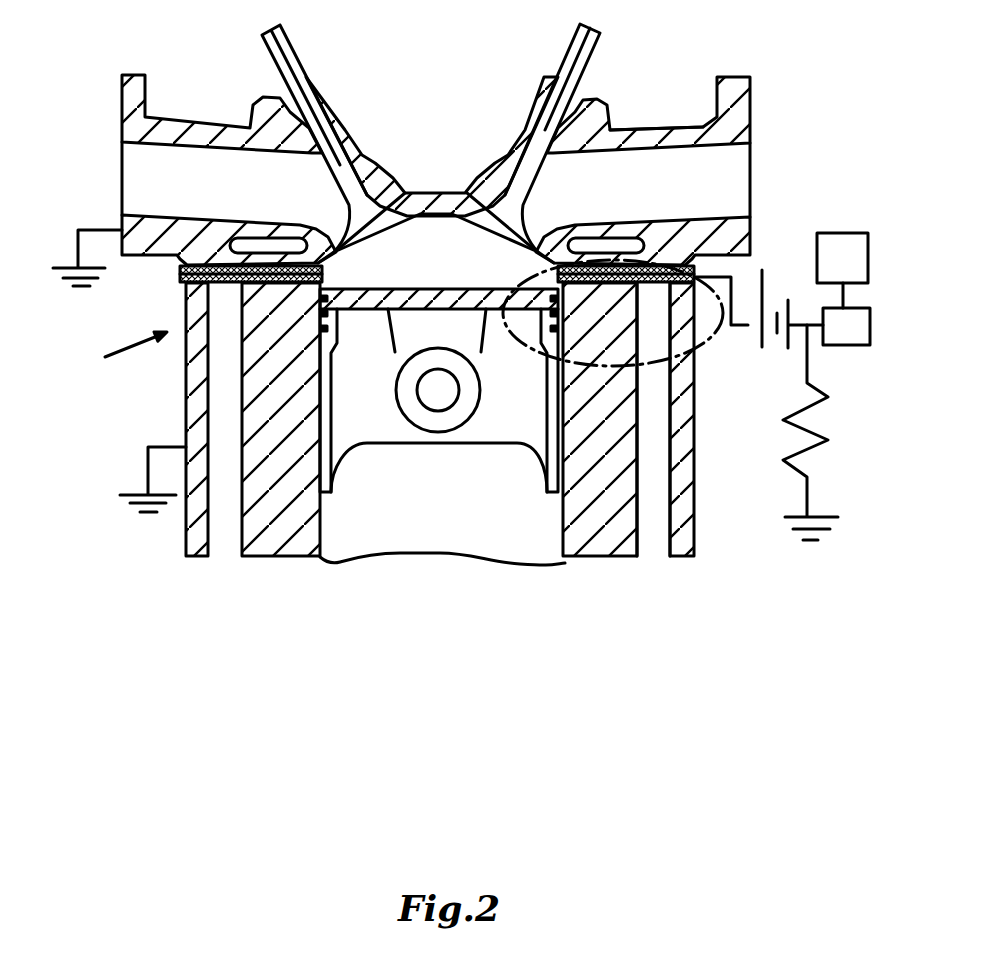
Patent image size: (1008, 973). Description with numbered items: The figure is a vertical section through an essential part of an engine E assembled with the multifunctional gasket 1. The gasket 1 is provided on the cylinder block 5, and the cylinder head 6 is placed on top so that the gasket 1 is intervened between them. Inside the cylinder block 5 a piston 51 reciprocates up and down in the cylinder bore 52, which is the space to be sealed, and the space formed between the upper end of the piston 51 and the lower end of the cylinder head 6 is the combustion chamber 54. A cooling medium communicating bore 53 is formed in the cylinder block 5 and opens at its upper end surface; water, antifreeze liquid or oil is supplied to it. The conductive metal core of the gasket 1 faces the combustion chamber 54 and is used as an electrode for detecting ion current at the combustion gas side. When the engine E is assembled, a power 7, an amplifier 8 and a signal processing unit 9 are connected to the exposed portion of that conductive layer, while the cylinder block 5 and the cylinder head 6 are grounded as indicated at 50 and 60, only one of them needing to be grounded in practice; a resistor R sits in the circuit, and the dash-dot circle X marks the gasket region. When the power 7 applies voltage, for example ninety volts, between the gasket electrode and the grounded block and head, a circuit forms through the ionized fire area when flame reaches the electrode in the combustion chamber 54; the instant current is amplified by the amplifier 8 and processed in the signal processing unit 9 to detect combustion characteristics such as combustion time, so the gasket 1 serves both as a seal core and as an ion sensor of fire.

The multifunctional gasket 1 is at (167, 257).
The cylinder block 5 is at (700, 518).
The cylinder head 6 is at (605, 137).
The power 7 is at (763, 298).
The amplifier 8 is at (855, 345).
The signal processing unit 9 is at (838, 240).
The ground 50 is at (141, 492).
The piston 51 is at (345, 408).
The cylinder bore 52 is at (418, 538).
The cooling medium communicating bore 53 is at (658, 540).
The combustion chamber 54 is at (430, 237).
The ground 60 is at (64, 262).
The engine E is at (120, 355).
The resistor R is at (828, 437).
The gap region X is at (715, 345).